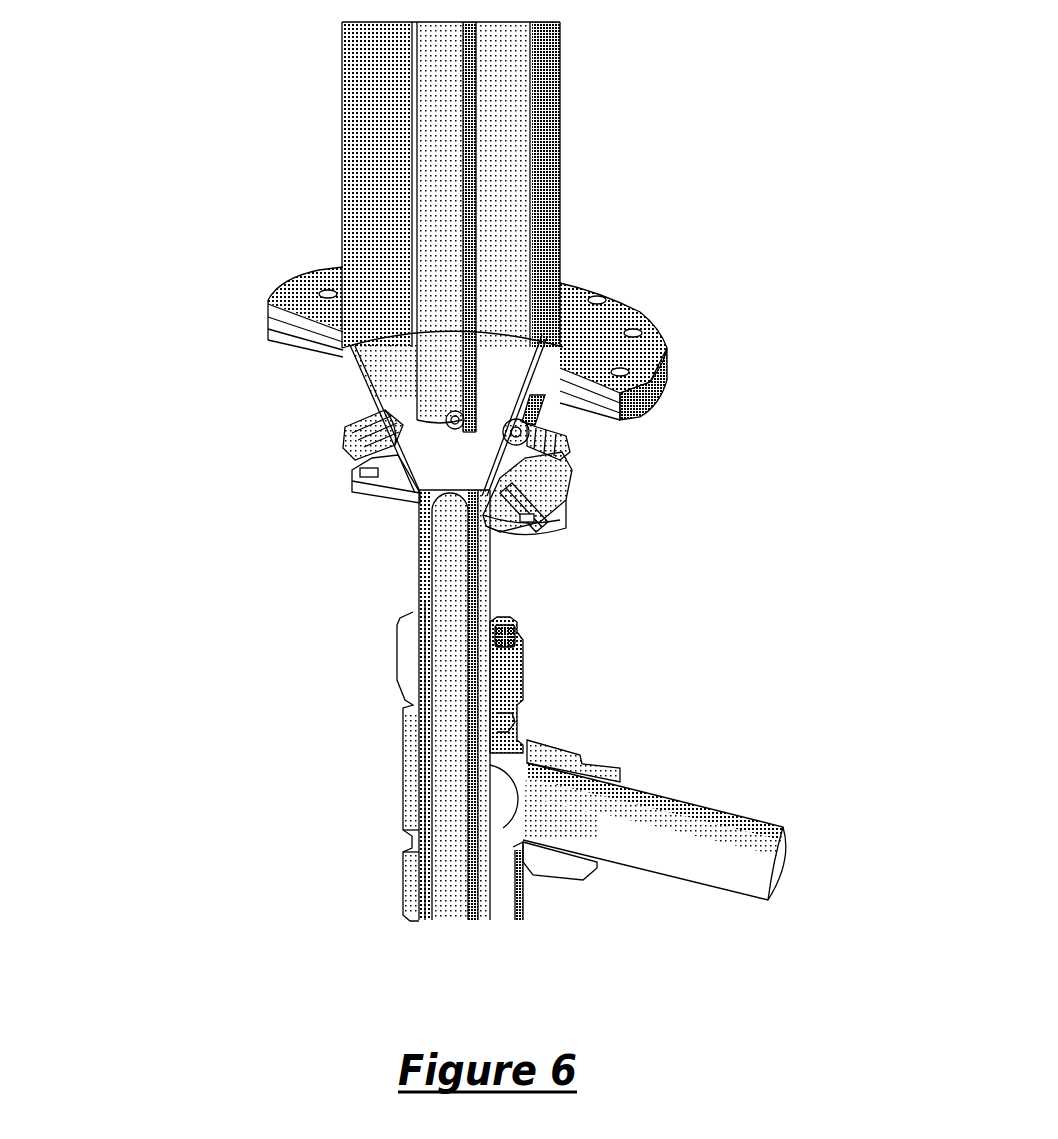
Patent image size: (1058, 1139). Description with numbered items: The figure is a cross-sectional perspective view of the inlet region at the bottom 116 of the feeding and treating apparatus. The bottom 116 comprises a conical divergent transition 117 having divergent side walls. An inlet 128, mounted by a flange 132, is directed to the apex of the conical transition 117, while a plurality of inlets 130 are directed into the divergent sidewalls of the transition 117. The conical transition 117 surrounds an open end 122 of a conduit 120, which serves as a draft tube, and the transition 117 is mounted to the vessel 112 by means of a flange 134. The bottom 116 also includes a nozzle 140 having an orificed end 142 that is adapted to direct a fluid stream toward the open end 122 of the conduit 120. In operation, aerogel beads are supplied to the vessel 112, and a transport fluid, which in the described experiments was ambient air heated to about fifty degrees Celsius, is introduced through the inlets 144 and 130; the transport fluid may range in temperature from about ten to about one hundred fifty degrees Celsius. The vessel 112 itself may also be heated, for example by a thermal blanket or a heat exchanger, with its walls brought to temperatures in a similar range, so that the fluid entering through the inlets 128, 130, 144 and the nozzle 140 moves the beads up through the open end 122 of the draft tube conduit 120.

The vessel 112 is at (337, 120).
The bottom 116 is at (288, 582).
The conical divergent transition 117 is at (370, 388).
The conduit 120 is at (460, 157).
The open end 122 is at (449, 415).
The inlet 128 is at (410, 555).
The inlets 130 is at (352, 427).
The flange 132 is at (352, 470).
The flange 134 is at (662, 347).
The nozzle 140 is at (520, 647).
The orificed end 142 is at (449, 535).
The inlets 144 is at (688, 803).